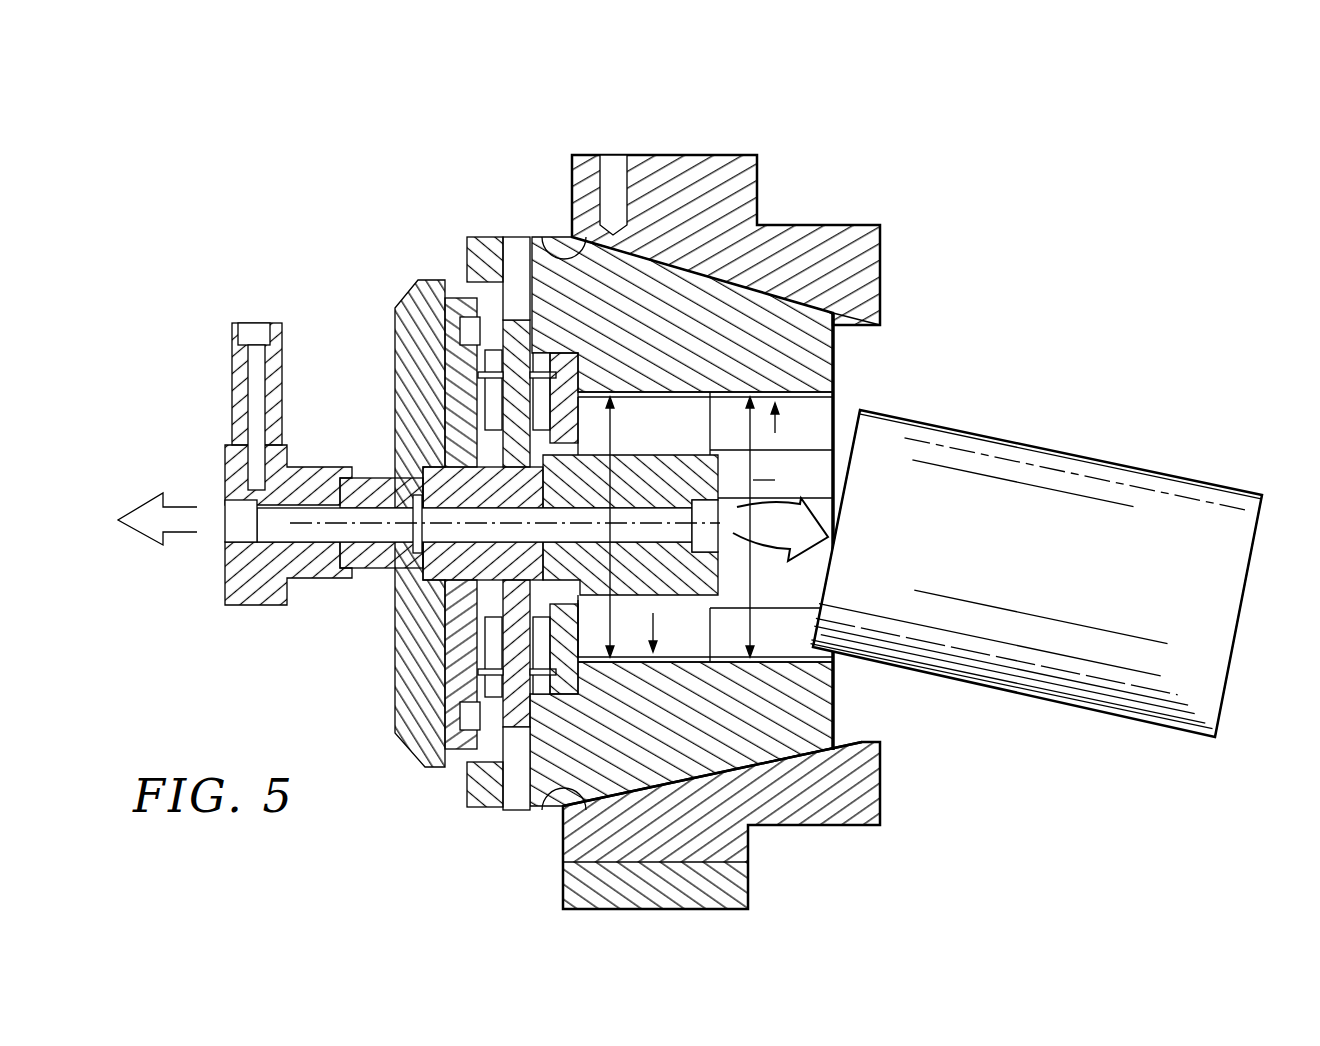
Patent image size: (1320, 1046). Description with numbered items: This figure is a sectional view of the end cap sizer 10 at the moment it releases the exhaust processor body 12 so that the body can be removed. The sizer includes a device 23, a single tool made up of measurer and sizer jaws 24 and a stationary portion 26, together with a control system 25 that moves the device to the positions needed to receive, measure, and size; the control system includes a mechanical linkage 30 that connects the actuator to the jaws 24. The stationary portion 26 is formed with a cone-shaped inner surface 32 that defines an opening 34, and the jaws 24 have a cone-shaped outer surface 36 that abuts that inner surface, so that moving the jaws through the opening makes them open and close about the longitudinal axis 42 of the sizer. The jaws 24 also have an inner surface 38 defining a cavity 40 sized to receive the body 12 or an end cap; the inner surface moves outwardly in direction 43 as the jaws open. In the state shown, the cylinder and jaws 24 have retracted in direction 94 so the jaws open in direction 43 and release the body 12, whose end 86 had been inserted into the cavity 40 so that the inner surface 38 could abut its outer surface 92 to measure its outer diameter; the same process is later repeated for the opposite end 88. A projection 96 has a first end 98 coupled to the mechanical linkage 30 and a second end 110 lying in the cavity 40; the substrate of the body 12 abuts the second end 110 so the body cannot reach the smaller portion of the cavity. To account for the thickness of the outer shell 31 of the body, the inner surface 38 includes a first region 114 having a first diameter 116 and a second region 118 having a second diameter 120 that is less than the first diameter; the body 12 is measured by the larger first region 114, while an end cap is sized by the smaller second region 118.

The end cap sizer 10 is at (639, 116).
The exhaust processor body 12 is at (1037, 592).
The device 23 is at (886, 184).
The measurer and sizer jaws 24 is at (822, 345).
The control system 25 is at (293, 272).
The stationary portion 26 is at (668, 172).
The mechanical linkage 30 is at (362, 312).
The outer shell 31 is at (1126, 469).
The cone-shaped inner surface 32 is at (560, 783).
The opening 34 is at (538, 238).
The cone-shaped outer surface 36 is at (676, 786).
The inner surface 38 is at (643, 393).
The cavity 40 is at (826, 407).
The longitudinal axis 42 is at (313, 523).
The direction 43 is at (777, 427).
The end 86 is at (835, 647).
The opposite end 88 is at (1210, 735).
The outer surface 92 is at (1083, 712).
The direction 94 is at (178, 520).
The projection 96 is at (698, 568).
The first end 98 is at (425, 570).
The second end 110 is at (786, 479).
The first region 114 is at (845, 392).
The first diameter 116 is at (752, 618).
The second region 118 is at (670, 647).
The second diameter 120 is at (611, 430).